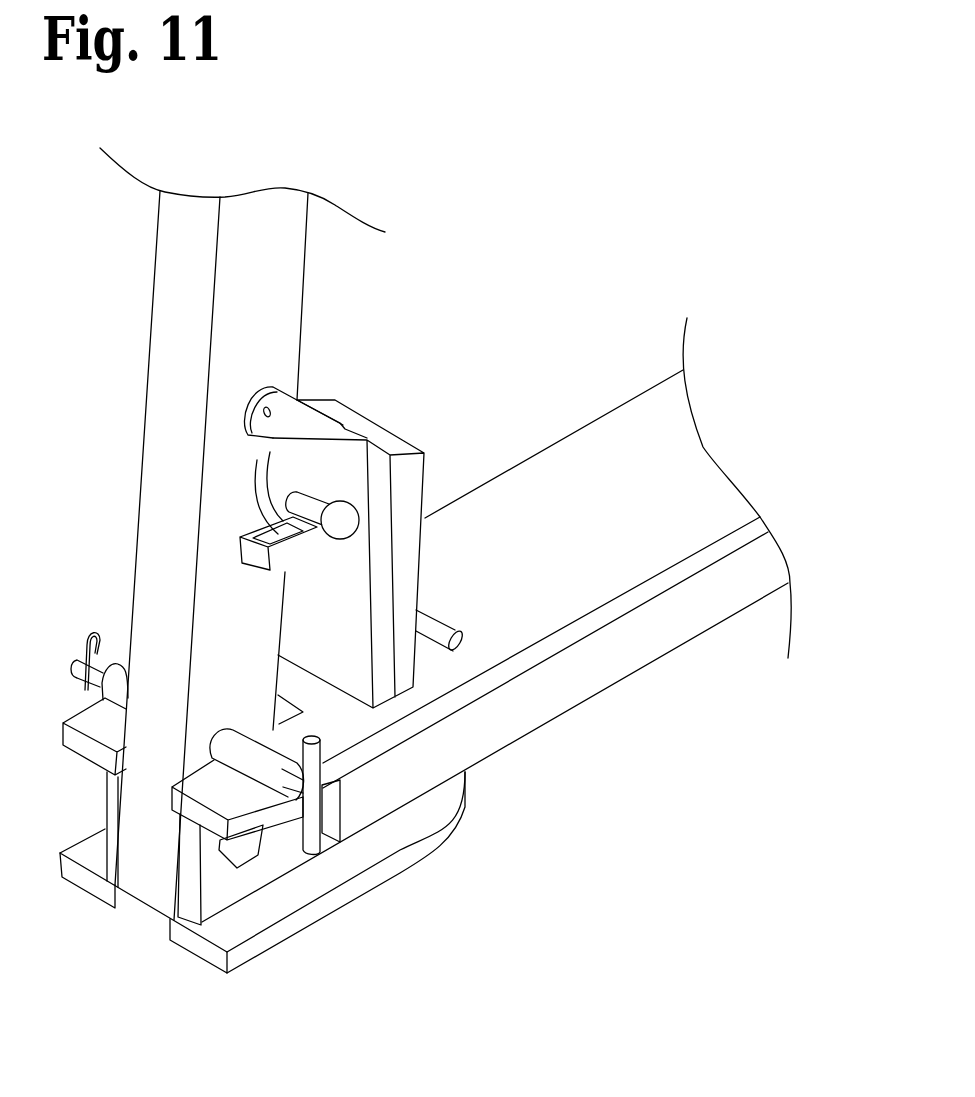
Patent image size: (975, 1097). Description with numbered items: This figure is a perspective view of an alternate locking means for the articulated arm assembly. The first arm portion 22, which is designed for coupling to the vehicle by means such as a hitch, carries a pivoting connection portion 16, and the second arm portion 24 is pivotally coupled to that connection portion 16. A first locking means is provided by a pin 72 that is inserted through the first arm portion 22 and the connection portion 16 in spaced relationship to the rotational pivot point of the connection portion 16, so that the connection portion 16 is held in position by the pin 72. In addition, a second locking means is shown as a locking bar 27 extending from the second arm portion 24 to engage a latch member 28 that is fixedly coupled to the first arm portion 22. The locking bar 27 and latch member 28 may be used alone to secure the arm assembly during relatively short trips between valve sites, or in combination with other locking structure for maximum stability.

The connection portion 16 is at (322, 908).
The first arm portion 22 is at (577, 537).
The second arm portion 24 is at (250, 347).
The locking bar 27 is at (248, 532).
The latch member 28 is at (308, 458).
The pin 72 is at (440, 638).